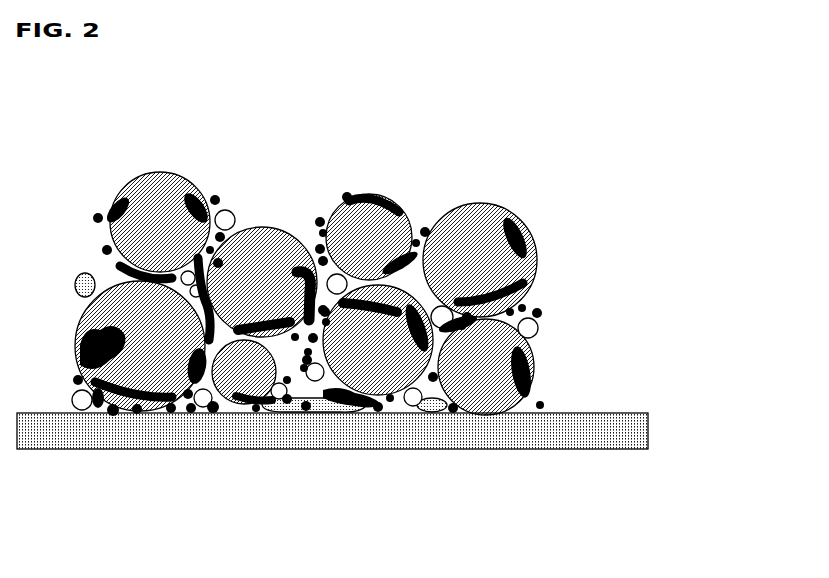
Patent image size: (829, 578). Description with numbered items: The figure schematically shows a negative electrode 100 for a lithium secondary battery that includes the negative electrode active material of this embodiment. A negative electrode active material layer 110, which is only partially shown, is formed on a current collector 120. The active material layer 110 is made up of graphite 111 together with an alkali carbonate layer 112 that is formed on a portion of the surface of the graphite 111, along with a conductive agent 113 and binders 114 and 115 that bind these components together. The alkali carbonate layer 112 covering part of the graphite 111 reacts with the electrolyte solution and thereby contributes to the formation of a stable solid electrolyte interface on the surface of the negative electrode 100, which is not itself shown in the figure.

The negative electrode 100 is at (77, 100).
The negative electrode active material layer 110 is at (660, 203).
The graphite 111 is at (480, 220).
The alkali carbonate layer 112 is at (532, 354).
The conductive agent 113 is at (234, 215).
The binder 114 is at (171, 410).
The binder 115 is at (315, 410).
The current collector 120 is at (648, 435).